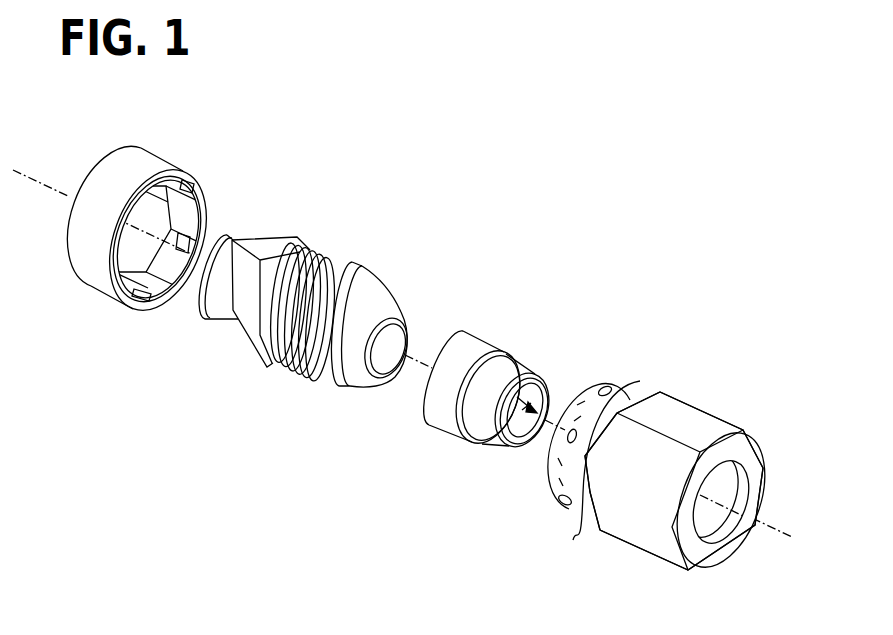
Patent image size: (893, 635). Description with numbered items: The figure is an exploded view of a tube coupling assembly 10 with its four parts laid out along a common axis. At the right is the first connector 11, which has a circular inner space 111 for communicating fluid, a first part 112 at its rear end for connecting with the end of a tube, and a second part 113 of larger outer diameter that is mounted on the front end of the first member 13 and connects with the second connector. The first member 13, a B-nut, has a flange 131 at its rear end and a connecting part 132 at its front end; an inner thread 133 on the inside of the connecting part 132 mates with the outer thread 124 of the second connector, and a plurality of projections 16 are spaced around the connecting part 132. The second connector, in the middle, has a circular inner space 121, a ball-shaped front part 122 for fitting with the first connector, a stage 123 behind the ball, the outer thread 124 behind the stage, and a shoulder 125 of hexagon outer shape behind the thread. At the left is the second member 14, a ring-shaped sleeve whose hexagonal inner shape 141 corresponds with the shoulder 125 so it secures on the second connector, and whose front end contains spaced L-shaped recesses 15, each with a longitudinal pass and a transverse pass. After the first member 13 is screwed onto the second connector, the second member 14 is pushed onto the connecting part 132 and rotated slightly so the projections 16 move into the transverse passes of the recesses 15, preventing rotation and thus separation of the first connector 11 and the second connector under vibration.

The tube coupling assembly 10 is at (606, 212).
The first connector 11 is at (491, 325).
The first member 13 is at (695, 412).
The second member 14 is at (152, 165).
The recesses 15 is at (150, 300).
The projections 16 is at (565, 498).
The circular inner space 111 is at (536, 400).
The first part 112 is at (518, 367).
The second part 113 is at (443, 387).
The circular inner space 121 is at (213, 238).
The front part 122 is at (360, 377).
The stage 123 is at (328, 262).
The outer thread 124 is at (300, 367).
The shoulder 125 is at (300, 246).
The flange 131 is at (583, 507).
The connecting part 132 is at (613, 397).
The inner thread 133 is at (557, 460).
The inner shape 141 is at (152, 217).